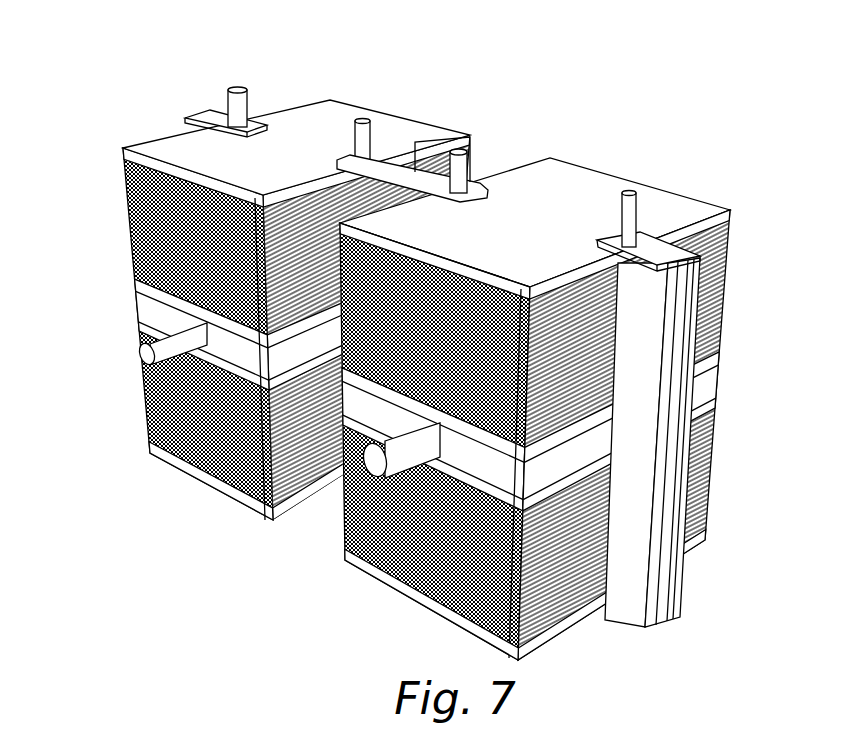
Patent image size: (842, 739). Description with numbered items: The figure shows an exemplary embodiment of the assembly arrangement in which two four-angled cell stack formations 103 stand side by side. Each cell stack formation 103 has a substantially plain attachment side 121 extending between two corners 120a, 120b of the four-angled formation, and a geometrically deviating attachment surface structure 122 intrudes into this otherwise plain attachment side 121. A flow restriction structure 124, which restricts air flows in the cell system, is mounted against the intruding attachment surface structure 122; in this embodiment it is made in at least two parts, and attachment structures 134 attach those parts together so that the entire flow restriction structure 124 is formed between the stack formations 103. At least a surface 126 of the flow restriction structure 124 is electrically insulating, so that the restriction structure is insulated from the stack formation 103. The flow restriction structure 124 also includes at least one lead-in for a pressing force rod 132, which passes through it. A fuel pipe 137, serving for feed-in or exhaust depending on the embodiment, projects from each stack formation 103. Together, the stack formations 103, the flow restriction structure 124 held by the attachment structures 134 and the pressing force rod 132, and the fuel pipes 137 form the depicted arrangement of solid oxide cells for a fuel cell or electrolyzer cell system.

The cell stack formation 103 is at (410, 595).
The corner of the four angled stack formation 120a is at (398, 226).
The corner of the four angled stack formation 120b is at (551, 155).
The substantially plain attachment side 121 is at (723, 317).
The geometrically deviating attachment surface structure 122 is at (598, 232).
The flow restriction structure 124 is at (672, 577).
The surface of the flow restriction structure 126 is at (498, 200).
The pressing force rod 132 is at (634, 194).
The attachment structure 134 is at (440, 150).
The fuel pipe 137 is at (366, 462).